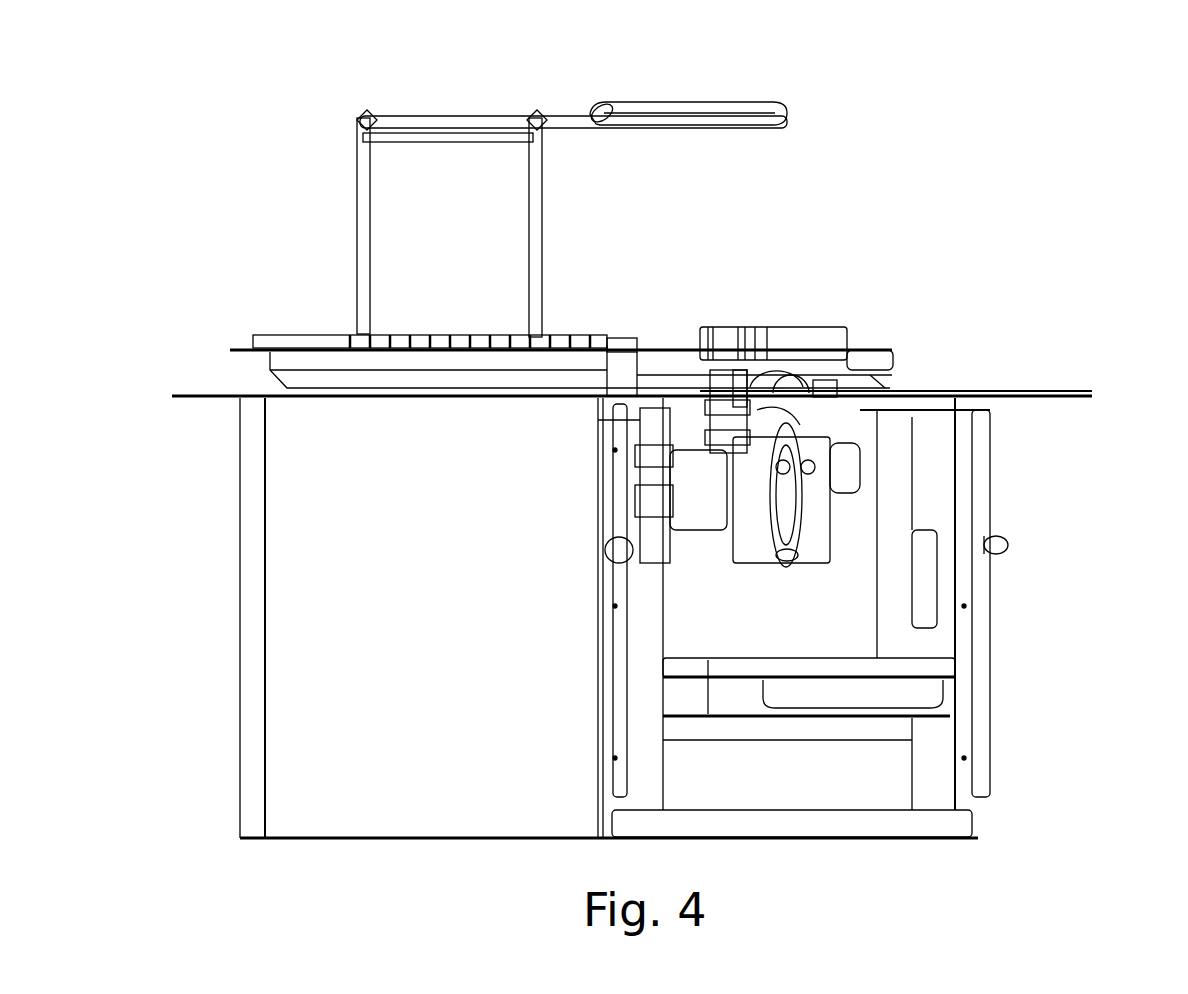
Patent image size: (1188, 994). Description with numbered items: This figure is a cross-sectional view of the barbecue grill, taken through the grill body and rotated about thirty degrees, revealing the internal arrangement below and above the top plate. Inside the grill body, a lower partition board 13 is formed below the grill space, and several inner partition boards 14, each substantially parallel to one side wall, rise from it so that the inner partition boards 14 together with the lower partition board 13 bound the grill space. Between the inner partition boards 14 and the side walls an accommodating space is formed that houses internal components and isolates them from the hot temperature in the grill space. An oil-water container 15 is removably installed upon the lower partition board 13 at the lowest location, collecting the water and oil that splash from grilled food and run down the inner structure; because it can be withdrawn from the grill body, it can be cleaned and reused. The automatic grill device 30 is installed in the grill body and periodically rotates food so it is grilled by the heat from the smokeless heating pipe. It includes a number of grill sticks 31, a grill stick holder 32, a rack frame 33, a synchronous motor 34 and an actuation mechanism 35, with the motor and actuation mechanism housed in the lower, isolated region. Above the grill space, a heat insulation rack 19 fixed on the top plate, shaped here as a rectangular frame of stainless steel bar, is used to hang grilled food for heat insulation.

The lower partition board 13 is at (968, 734).
The inner partition board 14 is at (853, 545).
The oil-water container 15 is at (955, 680).
The heat insulation rack 19 is at (680, 100).
The automatic grill device 30 is at (1070, 237).
The grill stick 31 is at (855, 340).
The grill stick holder 32 is at (622, 335).
The rack frame 33 is at (531, 287).
The synchronous motor 34 is at (867, 397).
The actuation mechanism 35 is at (833, 395).